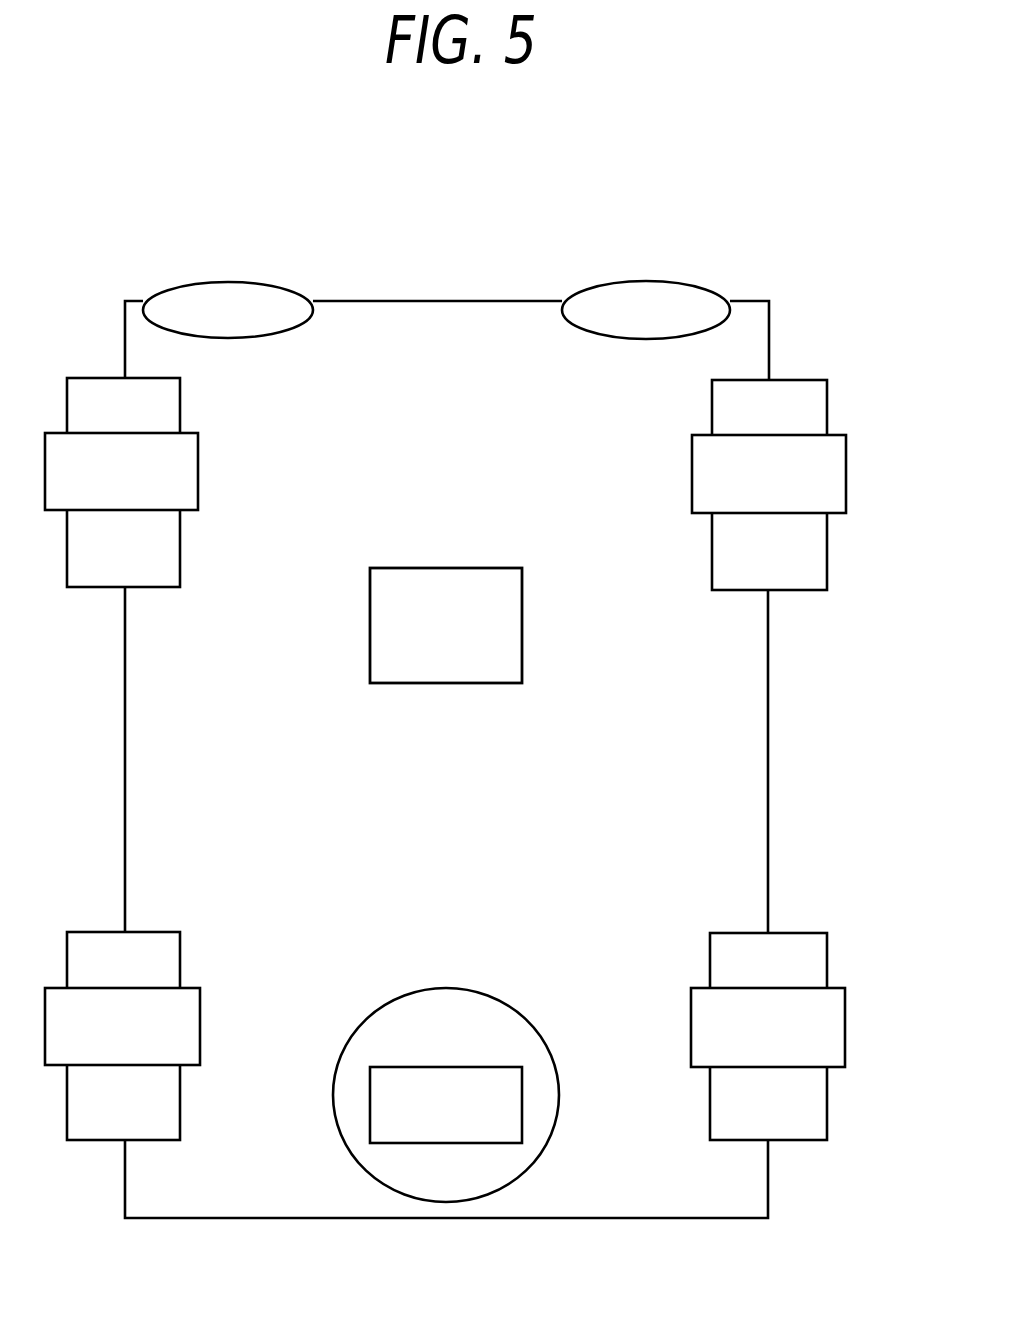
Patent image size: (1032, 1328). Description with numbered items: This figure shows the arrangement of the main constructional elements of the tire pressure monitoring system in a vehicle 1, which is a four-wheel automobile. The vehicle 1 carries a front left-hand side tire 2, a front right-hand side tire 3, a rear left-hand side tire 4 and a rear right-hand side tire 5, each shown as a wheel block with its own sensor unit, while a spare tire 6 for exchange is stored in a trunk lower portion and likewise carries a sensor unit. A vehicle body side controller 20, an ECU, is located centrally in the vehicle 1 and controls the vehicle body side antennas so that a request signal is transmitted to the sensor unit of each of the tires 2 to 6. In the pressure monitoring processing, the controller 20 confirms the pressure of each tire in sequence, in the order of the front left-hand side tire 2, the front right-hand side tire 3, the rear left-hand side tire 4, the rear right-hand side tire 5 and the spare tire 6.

The vehicle 1 is at (405, 300).
The front left-hand side tire 2 is at (88, 378).
The front right-hand side tire 3 is at (805, 380).
The rear left-hand side tire 4 is at (80, 932).
The rear right-hand side tire 5 is at (803, 933).
The spare tire 6 is at (447, 988).
The vehicle body side controller 20 is at (447, 568).